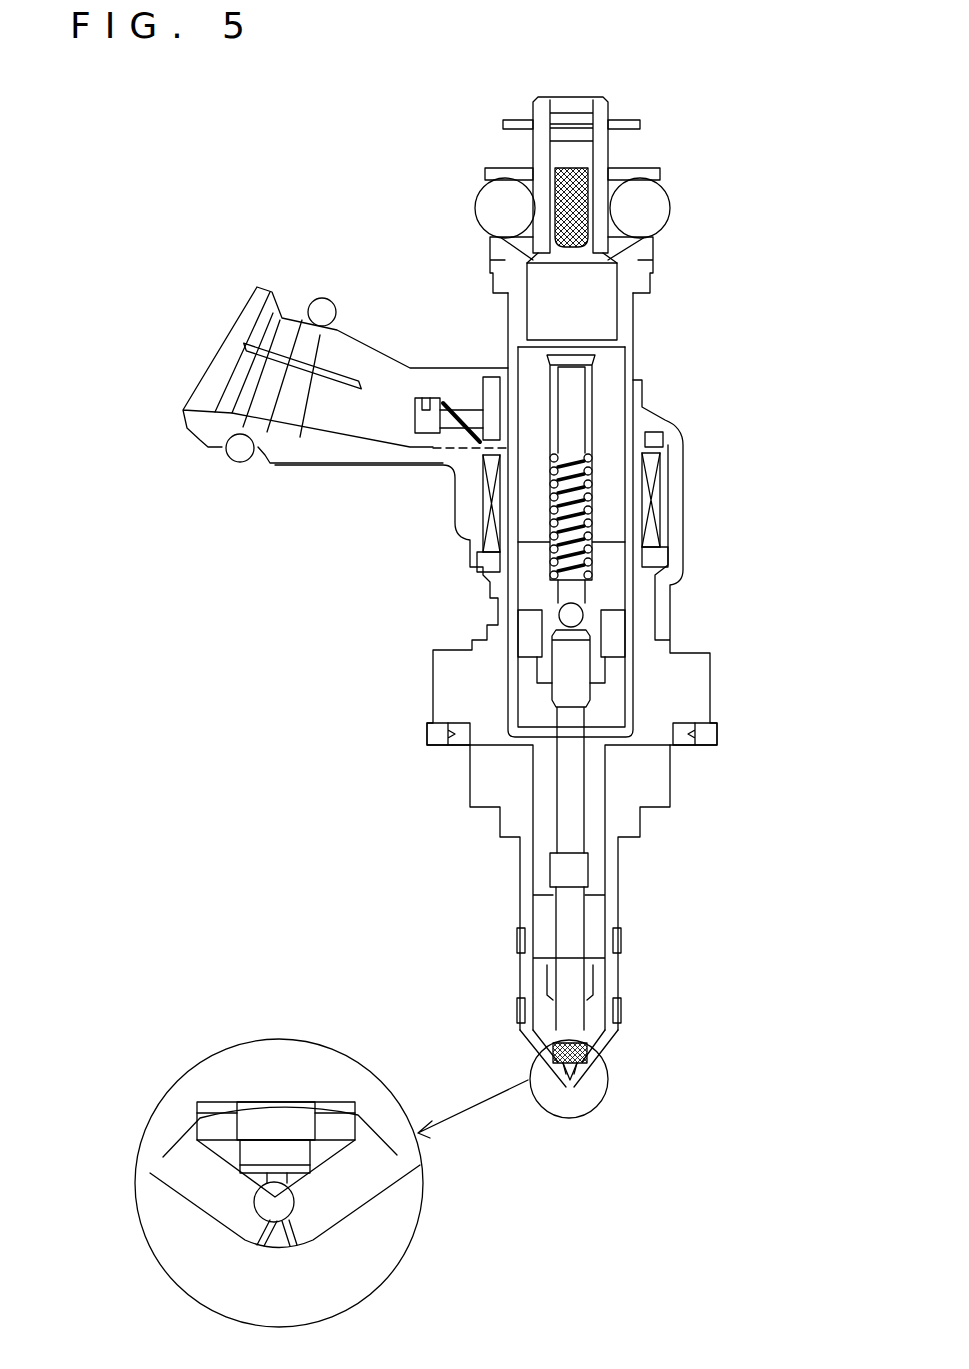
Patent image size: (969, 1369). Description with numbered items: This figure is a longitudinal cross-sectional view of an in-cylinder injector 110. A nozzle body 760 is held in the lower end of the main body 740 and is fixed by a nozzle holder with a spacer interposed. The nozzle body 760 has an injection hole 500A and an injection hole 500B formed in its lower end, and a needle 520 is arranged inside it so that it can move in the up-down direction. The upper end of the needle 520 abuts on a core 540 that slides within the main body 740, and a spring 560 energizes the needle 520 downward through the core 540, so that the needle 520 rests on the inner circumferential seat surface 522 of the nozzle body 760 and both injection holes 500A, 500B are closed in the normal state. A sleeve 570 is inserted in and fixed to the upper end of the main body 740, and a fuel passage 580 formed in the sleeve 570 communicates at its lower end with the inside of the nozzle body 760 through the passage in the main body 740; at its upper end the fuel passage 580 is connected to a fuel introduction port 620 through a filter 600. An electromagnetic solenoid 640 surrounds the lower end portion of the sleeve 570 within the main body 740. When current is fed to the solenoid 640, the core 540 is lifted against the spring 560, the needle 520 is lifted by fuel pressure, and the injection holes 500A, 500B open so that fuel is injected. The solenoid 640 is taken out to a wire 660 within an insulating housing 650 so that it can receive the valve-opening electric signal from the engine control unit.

The in-cylinder injector 110 is at (482, 685).
The injection hole 500A is at (553, 1098).
The injection hole 500B is at (595, 1095).
The needle 520 is at (567, 920).
The inner circumferential seat surface 522 is at (585, 1022).
The core 540 is at (573, 872).
The spring 560 is at (570, 467).
The sleeve 570 is at (608, 372).
The fuel passage 580 is at (572, 408).
The filter 600 is at (575, 163).
The fuel introduction port 620 is at (573, 100).
The electromagnetic solenoid 640 is at (492, 527).
The insulating housing 650 is at (315, 450).
The wire 660 is at (293, 338).
The main body 740 is at (685, 515).
The nozzle body 760 is at (612, 917).